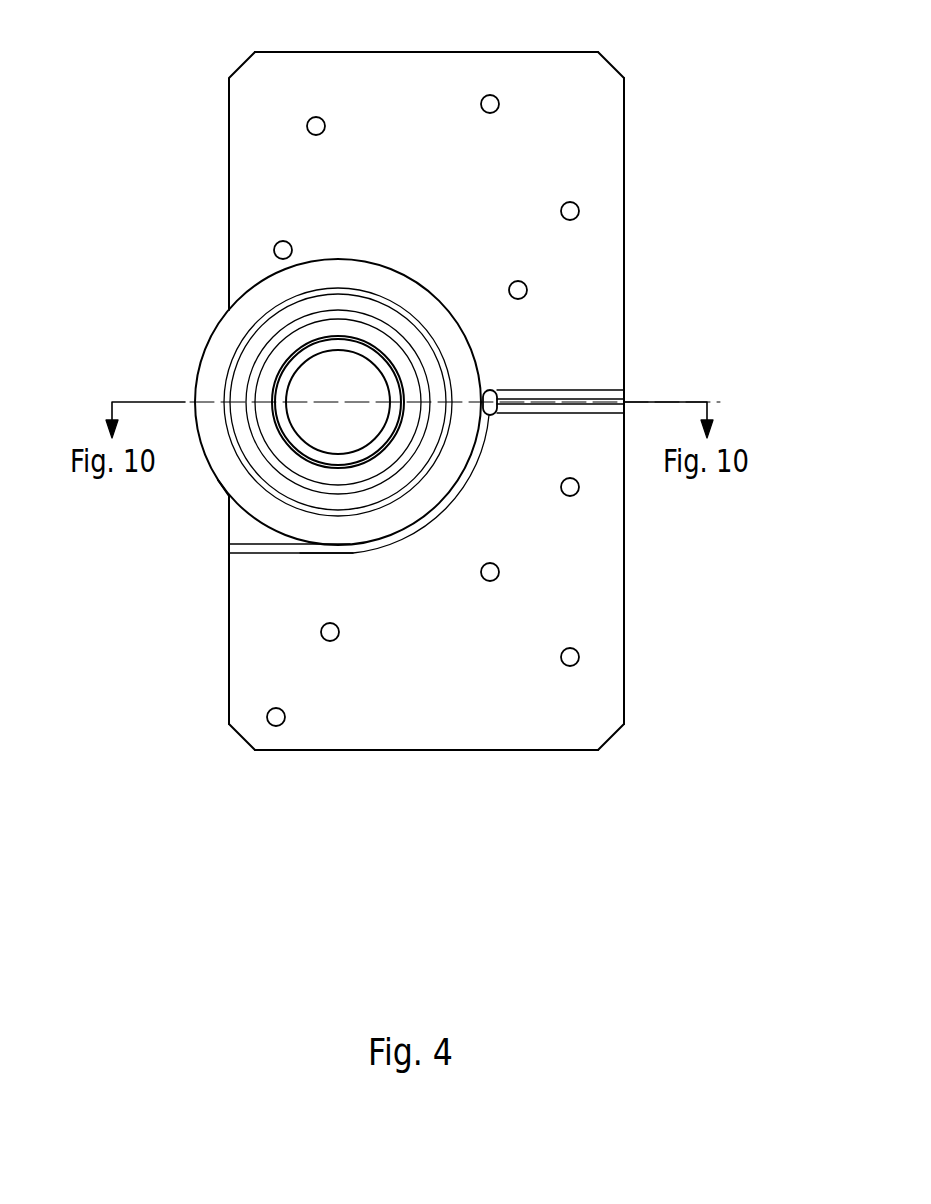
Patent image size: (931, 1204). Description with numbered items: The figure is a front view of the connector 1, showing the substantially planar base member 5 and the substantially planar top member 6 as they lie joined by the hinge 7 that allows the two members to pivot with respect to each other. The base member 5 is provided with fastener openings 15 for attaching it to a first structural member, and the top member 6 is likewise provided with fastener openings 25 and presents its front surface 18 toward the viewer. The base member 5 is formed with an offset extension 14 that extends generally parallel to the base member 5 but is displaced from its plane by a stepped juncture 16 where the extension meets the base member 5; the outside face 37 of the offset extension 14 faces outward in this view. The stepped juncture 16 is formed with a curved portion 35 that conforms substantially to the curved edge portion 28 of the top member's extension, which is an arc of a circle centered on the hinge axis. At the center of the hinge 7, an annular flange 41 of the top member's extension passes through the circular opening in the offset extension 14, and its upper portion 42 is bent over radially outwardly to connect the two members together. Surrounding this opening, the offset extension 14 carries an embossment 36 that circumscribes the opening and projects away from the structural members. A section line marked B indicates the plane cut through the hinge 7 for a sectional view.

The connector 1 is at (603, 47).
The base member 5 is at (627, 557).
The top member 6 is at (627, 258).
The hinge 7 is at (203, 353).
The offset extension 14 is at (233, 532).
The fastener openings 15 is at (572, 502).
The stepped juncture 16 is at (373, 545).
The front surface 18 is at (586, 103).
The fastener openings 25 is at (325, 131).
The curved edge portion 28 is at (469, 470).
The curved portion 35 is at (483, 436).
The embossment 36 is at (437, 357).
The outside face 37 is at (278, 528).
The annular flange 41 is at (290, 383).
The upper portion 42 is at (378, 458).
The bottom edge B is at (597, 716).